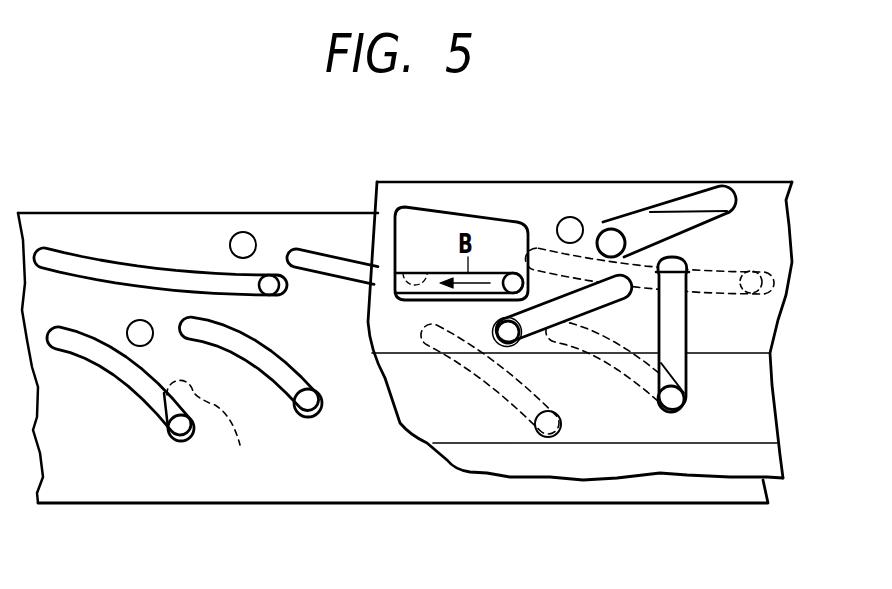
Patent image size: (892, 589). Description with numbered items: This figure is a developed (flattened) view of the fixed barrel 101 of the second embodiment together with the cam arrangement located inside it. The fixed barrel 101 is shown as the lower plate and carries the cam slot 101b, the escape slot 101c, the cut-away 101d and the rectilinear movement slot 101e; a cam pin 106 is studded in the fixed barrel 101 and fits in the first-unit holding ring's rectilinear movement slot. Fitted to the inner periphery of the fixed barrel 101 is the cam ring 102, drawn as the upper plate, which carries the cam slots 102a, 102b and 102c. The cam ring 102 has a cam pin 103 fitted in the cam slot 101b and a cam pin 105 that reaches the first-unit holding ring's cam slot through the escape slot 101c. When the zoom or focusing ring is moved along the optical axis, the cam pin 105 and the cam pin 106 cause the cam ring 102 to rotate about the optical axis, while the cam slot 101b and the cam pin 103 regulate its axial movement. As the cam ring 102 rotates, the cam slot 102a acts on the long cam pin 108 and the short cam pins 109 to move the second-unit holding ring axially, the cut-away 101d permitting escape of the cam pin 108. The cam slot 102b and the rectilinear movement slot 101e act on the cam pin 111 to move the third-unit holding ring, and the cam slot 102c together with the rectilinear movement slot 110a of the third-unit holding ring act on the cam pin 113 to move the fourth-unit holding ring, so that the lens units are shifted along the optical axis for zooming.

The fixed barrel 101 is at (758, 188).
The cam slot 101b is at (627, 298).
The escape slot 101c is at (692, 201).
The cut-away 101d is at (517, 228).
The rectilinear movement slot 101e is at (682, 338).
The cam ring 102 is at (320, 211).
The cam slot 102a is at (163, 276).
The cam slot 102b is at (294, 370).
The cam slot 102c is at (130, 383).
The cam pin 103 is at (132, 326).
The cam pin 105 is at (245, 232).
The cam pin 106 is at (570, 217).
The cam pin 108 is at (513, 283).
The cam pin 109 is at (272, 293).
The rectilinear movement slot 110a is at (219, 424).
The cam pin 111 is at (312, 410).
The cam pin 113 is at (180, 438).